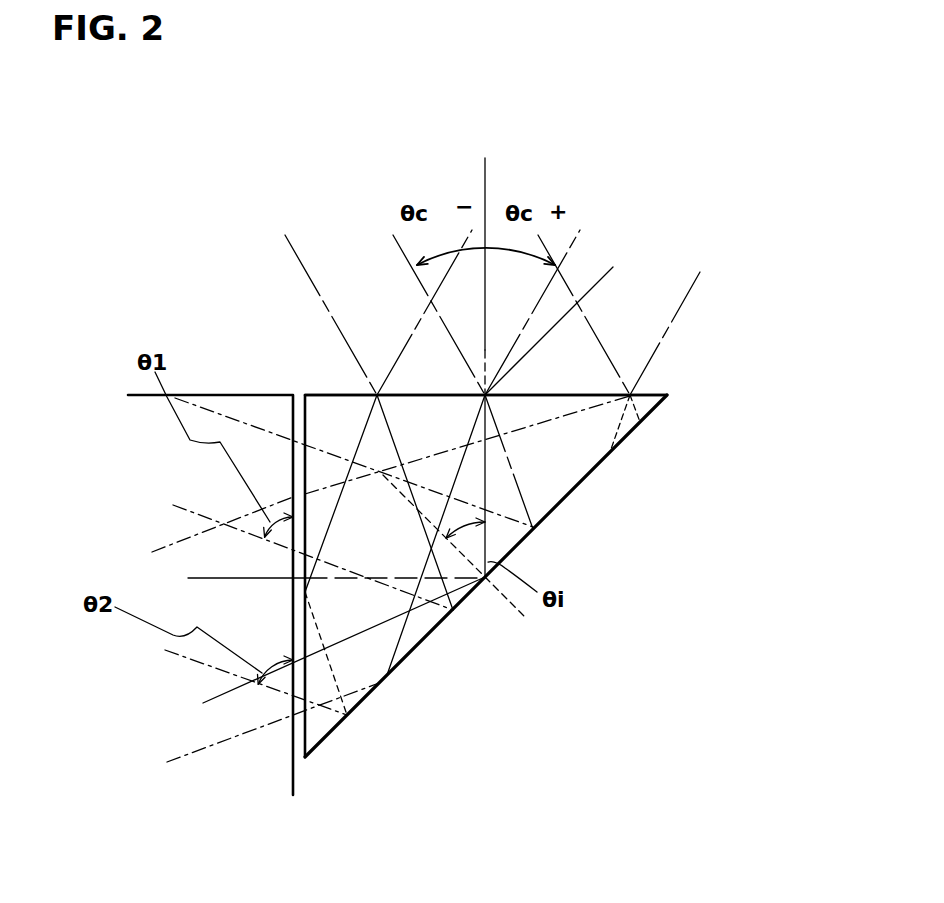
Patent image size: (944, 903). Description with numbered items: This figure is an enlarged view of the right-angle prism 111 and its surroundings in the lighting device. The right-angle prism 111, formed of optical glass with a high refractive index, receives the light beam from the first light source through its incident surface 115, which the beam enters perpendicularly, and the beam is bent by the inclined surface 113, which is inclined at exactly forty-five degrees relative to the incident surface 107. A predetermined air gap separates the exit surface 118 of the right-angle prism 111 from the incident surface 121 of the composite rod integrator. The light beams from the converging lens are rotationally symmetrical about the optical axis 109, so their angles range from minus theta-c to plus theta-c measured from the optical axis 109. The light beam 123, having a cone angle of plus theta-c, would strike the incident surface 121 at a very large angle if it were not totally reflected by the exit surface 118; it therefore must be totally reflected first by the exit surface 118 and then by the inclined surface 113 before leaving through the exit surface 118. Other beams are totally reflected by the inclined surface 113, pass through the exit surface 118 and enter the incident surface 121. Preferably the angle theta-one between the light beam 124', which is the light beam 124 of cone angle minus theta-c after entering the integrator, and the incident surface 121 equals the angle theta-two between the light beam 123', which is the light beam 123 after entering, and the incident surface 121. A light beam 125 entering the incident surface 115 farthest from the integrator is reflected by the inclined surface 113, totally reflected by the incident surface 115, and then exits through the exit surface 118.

The incident surface 107 is at (613, 267).
The optical axis 109 is at (485, 183).
The right-angle prism 111 is at (585, 435).
The inclined surface 113 is at (565, 497).
The incident surface 115 is at (322, 393).
The exit surface 118 is at (293, 692).
The incident surface 121 is at (203, 703).
The light beam 123 is at (434, 409).
The light beam 124 is at (349, 376).
The light beam 123' is at (200, 682).
The light beam 124' is at (263, 509).
The light beam 125 is at (633, 395).